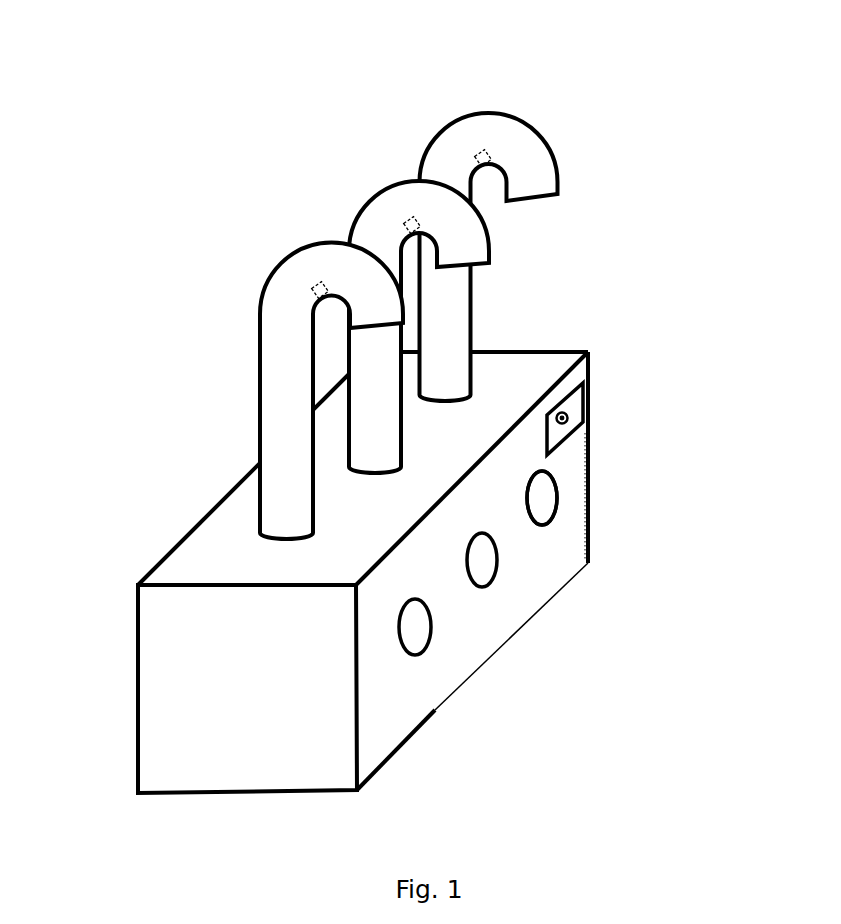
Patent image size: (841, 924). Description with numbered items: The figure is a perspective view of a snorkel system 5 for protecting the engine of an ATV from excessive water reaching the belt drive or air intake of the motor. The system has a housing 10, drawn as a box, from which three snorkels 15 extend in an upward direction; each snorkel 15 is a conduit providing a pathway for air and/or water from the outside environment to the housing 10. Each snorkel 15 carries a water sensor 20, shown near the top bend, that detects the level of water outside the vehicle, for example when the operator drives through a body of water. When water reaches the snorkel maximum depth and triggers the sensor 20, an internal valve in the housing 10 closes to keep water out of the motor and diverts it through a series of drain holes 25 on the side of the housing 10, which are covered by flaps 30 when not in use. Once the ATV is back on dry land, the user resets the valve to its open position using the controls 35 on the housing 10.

The snorkel system 5 is at (101, 160).
The housing 10 is at (195, 558).
The snorkel 15 is at (273, 332).
The water sensor 20 is at (320, 283).
The drain hole 25 is at (540, 493).
The flap 30 is at (545, 502).
The controls 35 is at (572, 410).